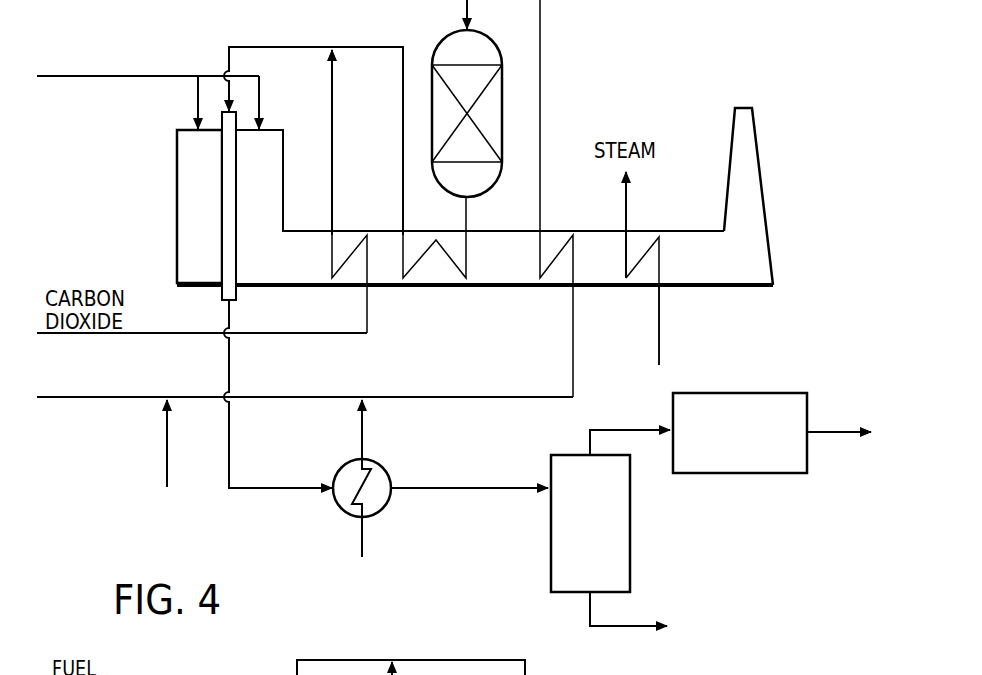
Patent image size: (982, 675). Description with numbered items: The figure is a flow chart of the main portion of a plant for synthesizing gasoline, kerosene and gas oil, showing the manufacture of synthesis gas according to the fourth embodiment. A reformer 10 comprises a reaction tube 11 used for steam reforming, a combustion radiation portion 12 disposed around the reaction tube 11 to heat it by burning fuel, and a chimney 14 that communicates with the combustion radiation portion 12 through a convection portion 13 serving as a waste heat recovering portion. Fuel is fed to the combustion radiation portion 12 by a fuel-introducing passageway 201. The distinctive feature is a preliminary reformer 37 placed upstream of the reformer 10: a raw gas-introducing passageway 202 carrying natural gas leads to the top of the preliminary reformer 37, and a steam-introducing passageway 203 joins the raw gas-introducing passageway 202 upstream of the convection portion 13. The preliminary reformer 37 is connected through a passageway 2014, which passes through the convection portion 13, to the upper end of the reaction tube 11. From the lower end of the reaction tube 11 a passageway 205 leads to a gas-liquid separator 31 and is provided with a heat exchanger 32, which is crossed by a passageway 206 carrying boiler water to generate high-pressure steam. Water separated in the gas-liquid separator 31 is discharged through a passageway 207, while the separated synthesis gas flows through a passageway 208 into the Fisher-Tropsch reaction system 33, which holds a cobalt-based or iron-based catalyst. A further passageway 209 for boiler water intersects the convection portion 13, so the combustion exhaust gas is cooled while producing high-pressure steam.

The reformer 10 is at (451, 222).
The reaction tube 11 is at (224, 165).
The combustion radiation portion 12 is at (177, 258).
The convection portion 13 is at (505, 287).
The chimney 14 is at (757, 175).
The fuel-introducing passageway 201 is at (117, 78).
The raw gas-introducing passageway 202 is at (117, 398).
The steam-introducing passageway 203 is at (169, 452).
The passageway 205 is at (261, 490).
The passageway 206 is at (364, 545).
The passageway 207 is at (620, 627).
The passageway 208 is at (620, 429).
The passageway 209 is at (656, 320).
The passageway 2014 is at (375, 47).
The gas-liquid separator 31 is at (631, 532).
The heat exchanger 32 is at (383, 470).
The Fisher-Tropsch (FT) reaction system 33 is at (786, 394).
The preliminary reformer 37 is at (487, 46).